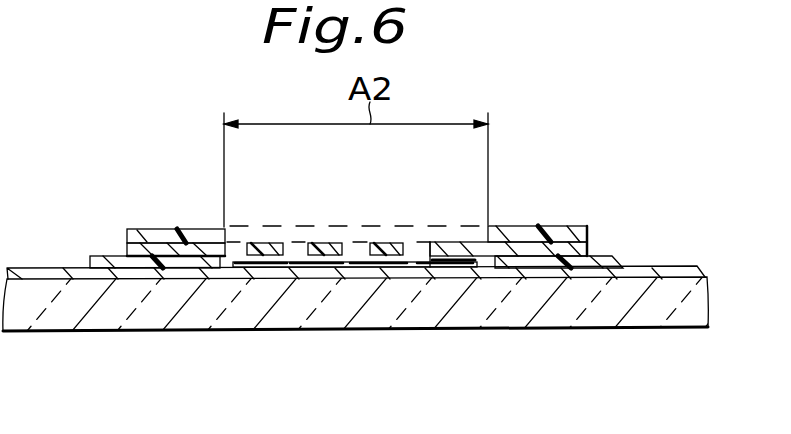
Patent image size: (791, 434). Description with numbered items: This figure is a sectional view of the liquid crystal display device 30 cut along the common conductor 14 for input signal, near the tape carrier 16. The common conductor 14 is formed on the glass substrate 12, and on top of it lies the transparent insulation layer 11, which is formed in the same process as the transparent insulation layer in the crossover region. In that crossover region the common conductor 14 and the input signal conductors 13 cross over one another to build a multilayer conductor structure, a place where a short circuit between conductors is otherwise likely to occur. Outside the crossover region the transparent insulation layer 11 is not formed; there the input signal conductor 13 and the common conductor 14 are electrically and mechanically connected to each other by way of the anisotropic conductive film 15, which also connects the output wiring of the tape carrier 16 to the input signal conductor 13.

The transparent insulation layer 11 is at (415, 264).
The glass substrate 12 is at (635, 315).
The input signal conductor 13 is at (155, 250).
The common conductor for input signal 14 is at (678, 268).
The anisotropic conductive film 15 is at (107, 257).
The tape carrier 16 is at (200, 236).
The liquid crystal display device 30 is at (577, 94).